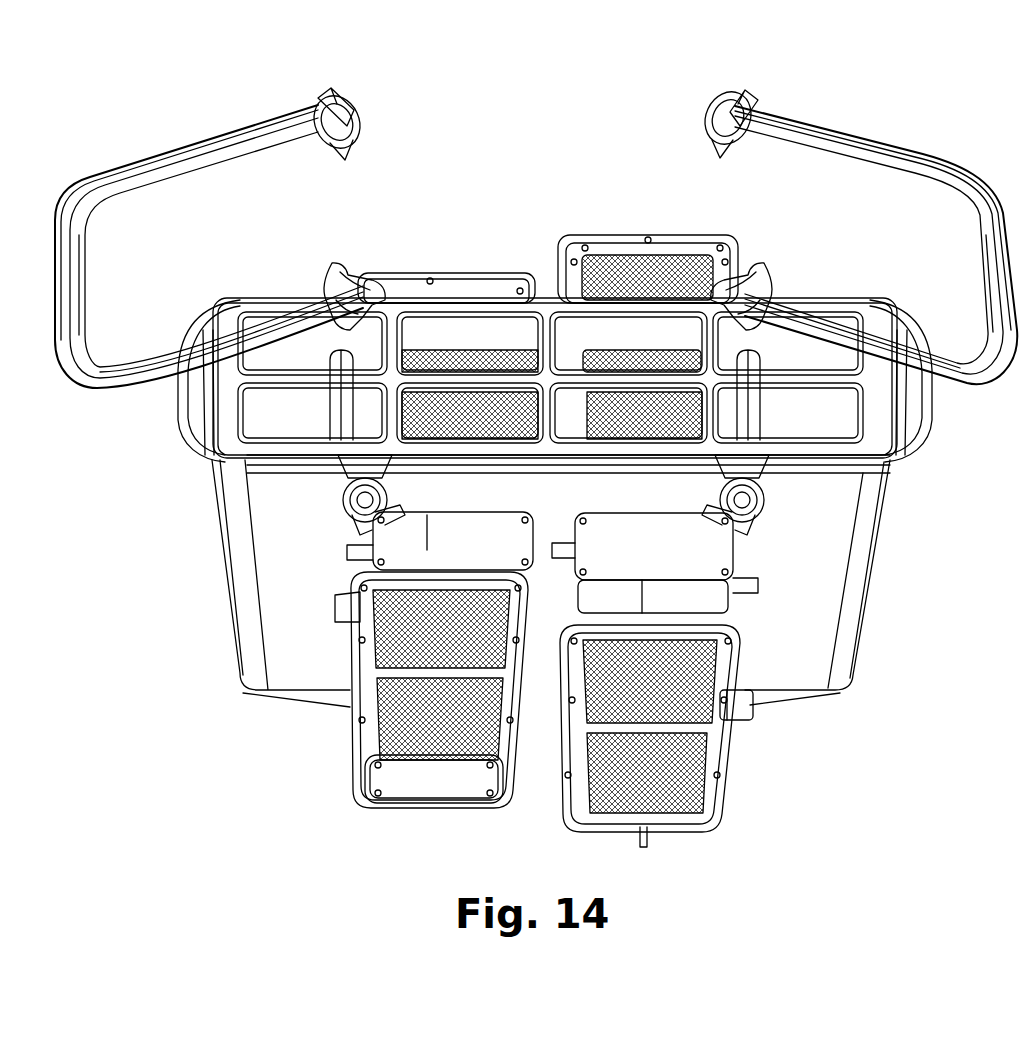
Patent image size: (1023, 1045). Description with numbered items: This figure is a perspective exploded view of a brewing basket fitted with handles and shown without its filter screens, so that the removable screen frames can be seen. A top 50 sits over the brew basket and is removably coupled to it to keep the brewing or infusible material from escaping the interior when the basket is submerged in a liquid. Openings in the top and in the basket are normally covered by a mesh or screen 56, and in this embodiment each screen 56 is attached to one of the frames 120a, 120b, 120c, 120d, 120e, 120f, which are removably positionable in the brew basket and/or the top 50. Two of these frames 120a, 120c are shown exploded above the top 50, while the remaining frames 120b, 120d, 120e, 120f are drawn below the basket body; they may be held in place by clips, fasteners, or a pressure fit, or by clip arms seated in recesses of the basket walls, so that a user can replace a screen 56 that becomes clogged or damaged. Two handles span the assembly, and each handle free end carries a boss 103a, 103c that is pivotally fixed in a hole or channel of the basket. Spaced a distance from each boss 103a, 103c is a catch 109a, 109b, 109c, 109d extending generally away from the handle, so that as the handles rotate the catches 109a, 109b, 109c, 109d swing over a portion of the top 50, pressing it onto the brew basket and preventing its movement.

The catch 109a is at (313, 100).
The catch 109b is at (323, 272).
The catch 109c is at (763, 90).
The catch 109d is at (763, 268).
The boss 103a is at (350, 133).
The boss 103c is at (707, 98).
The top 50 is at (543, 307).
The screen 56 is at (503, 327).
The frame 120a is at (393, 278).
The frame 120b is at (368, 740).
The frame 120c is at (682, 237).
The frame 120d is at (720, 798).
The frame 120e is at (375, 808).
The frame 120f is at (747, 720).